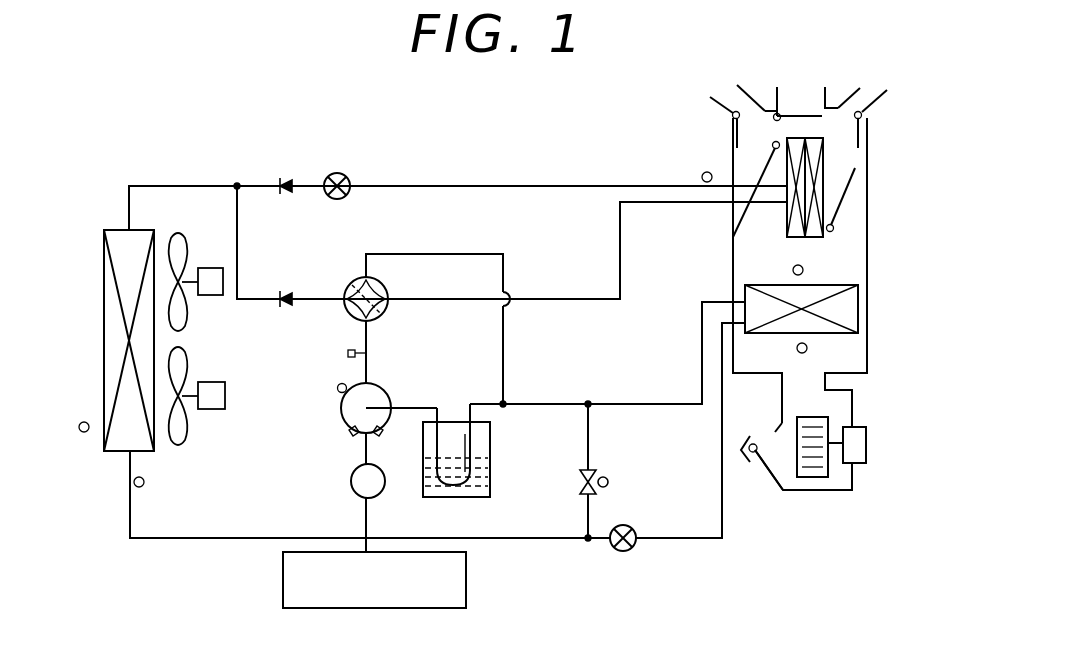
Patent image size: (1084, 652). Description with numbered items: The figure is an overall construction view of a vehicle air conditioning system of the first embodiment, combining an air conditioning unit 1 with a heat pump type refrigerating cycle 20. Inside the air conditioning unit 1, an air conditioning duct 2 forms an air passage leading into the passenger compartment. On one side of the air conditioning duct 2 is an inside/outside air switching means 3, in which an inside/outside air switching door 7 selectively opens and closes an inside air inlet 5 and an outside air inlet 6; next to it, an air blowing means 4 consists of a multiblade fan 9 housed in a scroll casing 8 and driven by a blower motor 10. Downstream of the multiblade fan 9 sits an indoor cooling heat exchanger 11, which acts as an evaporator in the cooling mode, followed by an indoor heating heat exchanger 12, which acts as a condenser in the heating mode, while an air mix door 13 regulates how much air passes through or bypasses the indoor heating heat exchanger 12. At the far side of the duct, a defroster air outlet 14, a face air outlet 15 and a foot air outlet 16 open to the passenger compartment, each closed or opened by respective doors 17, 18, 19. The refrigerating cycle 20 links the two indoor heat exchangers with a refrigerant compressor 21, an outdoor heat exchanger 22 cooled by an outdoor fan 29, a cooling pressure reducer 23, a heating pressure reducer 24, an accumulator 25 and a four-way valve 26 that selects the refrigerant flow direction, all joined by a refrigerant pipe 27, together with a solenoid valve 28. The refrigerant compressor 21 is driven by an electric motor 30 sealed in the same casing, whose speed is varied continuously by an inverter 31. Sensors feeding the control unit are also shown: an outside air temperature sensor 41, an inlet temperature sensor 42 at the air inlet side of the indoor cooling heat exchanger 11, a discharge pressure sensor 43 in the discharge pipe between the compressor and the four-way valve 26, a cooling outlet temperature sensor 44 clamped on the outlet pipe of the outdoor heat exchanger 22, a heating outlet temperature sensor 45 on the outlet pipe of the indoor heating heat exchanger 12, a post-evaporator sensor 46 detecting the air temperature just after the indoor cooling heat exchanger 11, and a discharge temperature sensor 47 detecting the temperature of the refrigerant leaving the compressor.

The air conditioning unit 1 is at (837, 304).
The air conditioning duct 2 is at (869, 248).
The inside/outside air switching means 3 is at (744, 468).
The air blowing means 4 is at (821, 497).
The inside air inlet 5 is at (764, 476).
The outside air inlet 6 is at (765, 414).
The inside/outside air switching door 7 is at (760, 438).
The scroll casing 8 is at (858, 492).
The multiblade fan 9 is at (815, 417).
The blower motor 10 is at (862, 445).
The indoor cooling heat exchanger 11 is at (848, 307).
The indoor heating heat exchanger 12 is at (828, 160).
The air mix door 13 is at (740, 160).
The defroster air outlet 14 is at (725, 85).
The face air outlet 15 is at (800, 82).
The foot air outlet 16 is at (871, 92).
The door 17 is at (730, 128).
The door 18 is at (808, 110).
The door 19 is at (885, 128).
The refrigerating cycle 20 is at (208, 146).
The refrigerant compressor 21 is at (380, 385).
The outdoor heat exchanger 22 is at (137, 230).
The cooling pressure reducer 23 is at (630, 550).
The heating pressure reducer 24 is at (347, 178).
The accumulator 25 is at (490, 482).
The four-way valve 26 is at (355, 316).
The refrigerant pipe 27 is at (468, 185).
The solenoid valve 28 is at (597, 480).
The outdoor fan 29 is at (213, 296).
The electric motor 30 is at (351, 481).
The inverter 31 is at (466, 585).
The outside air temperature sensor 41 is at (84, 432).
The inlet temperature sensor 42 is at (807, 348).
The discharge pressure sensor 43 is at (348, 355).
The cooling outlet temperature sensor 44 is at (144, 485).
The heating outlet temperature sensor 45 is at (702, 177).
The post-evaporator sensor 46 is at (803, 270).
The discharge temperature sensor 47 is at (340, 392).